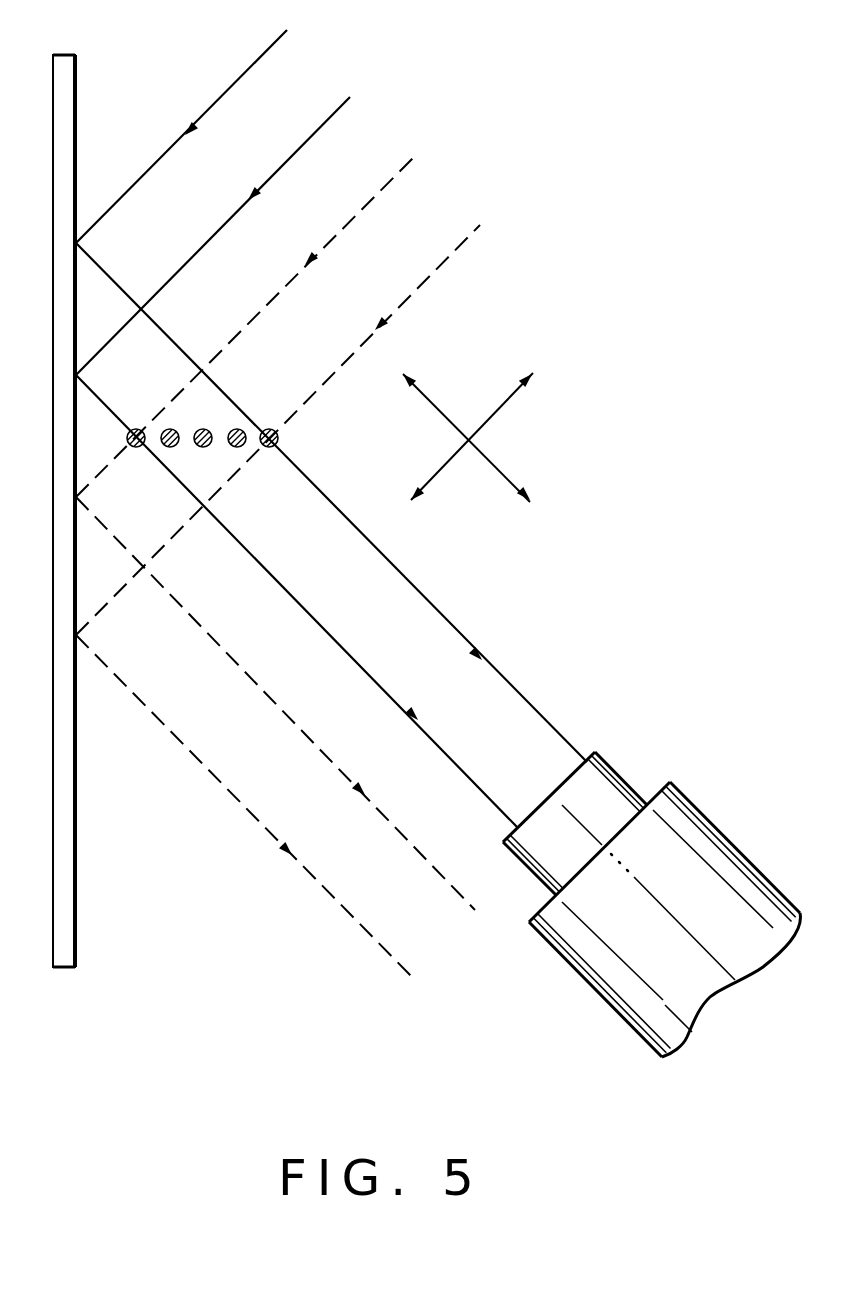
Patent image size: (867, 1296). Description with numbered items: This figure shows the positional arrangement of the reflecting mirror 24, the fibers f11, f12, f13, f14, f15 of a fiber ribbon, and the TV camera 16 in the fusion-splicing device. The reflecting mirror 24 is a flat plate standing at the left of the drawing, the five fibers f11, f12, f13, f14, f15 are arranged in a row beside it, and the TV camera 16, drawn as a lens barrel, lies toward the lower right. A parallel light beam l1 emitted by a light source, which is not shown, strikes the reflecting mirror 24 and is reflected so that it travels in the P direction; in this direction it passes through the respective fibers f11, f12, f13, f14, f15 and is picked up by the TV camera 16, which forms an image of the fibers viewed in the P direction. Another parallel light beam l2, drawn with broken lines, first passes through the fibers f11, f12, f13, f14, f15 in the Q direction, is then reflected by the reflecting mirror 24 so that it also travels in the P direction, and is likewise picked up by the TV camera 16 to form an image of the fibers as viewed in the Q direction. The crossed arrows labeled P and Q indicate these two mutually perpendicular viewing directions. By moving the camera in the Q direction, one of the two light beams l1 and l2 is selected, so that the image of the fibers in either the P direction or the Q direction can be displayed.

The TV camera 16 is at (781, 871).
The reflecting mirror 24 is at (77, 933).
The fiber f11 is at (136, 428).
The fiber f12 is at (176, 445).
The fiber f13 is at (203, 428).
The fiber f14 is at (243, 445).
The fiber f15 is at (268, 428).
The parallel light beam l1 is at (331, 429).
The parallel light beam l2 is at (278, 567).
The P direction P is at (480, 448).
The Q direction Q is at (459, 449).